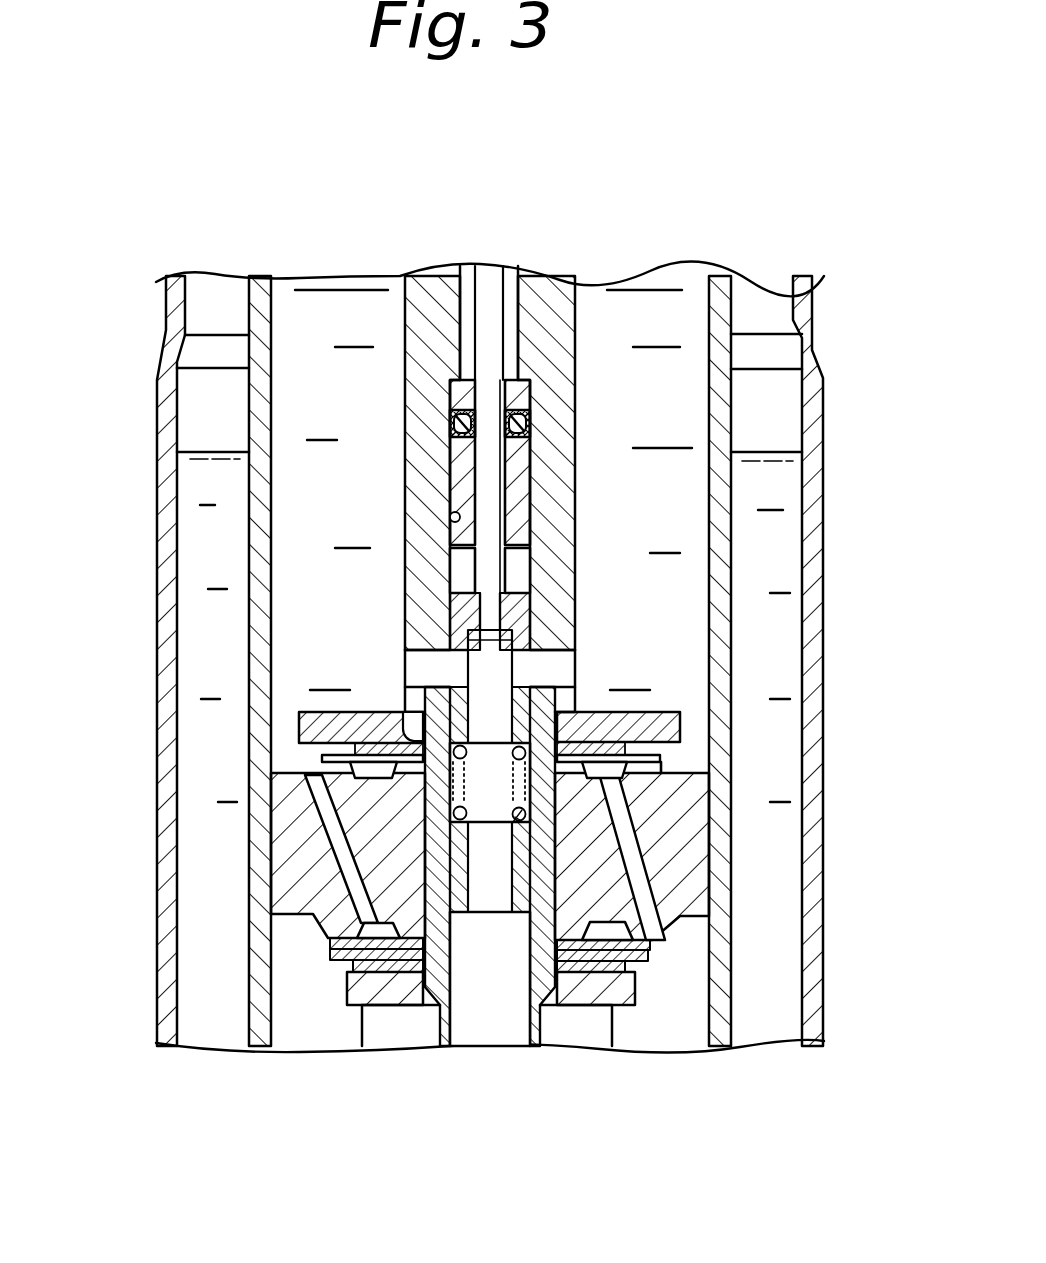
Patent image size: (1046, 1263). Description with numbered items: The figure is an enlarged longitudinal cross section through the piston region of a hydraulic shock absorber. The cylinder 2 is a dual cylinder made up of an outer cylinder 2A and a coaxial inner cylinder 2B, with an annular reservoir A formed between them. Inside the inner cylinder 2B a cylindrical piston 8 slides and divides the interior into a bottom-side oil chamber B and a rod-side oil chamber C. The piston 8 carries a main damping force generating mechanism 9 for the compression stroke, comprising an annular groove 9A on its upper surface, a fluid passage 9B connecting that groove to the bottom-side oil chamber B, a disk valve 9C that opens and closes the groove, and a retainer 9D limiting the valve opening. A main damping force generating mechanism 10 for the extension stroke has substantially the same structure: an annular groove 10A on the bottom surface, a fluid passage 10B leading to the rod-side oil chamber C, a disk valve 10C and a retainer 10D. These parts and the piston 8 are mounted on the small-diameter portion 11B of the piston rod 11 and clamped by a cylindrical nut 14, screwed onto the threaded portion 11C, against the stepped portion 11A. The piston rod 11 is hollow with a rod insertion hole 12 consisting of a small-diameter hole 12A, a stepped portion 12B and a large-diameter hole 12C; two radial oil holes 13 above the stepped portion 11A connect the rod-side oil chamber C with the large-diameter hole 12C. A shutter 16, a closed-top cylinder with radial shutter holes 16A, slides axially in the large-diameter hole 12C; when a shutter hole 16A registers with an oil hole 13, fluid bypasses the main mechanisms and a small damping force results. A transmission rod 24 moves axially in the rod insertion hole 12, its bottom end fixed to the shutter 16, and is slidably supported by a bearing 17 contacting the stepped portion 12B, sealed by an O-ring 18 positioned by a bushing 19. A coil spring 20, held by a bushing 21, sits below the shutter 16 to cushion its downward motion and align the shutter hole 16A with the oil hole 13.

The cylinder 2 is at (150, 485).
The outer cylinder 2A is at (813, 415).
The inner cylinder 2B is at (259, 392).
The rod-side oil chamber C is at (300, 430).
The annular reservoir A is at (780, 990).
The bottom-side oil chamber B is at (303, 1020).
The piston 8 is at (690, 827).
The main damping force generating mechanism 9 is at (650, 702).
The annular groove 9A is at (627, 749).
The fluid passage 9B is at (645, 873).
The disk valve 9C is at (663, 757).
The retainer 9D is at (682, 716).
The main damping force generating mechanism 10 is at (351, 1010).
The annular groove 10A is at (345, 962).
The fluid passage 10B is at (337, 850).
The disk valve 10C is at (335, 945).
The retainer 10D is at (408, 993).
The piston rod 11 is at (460, 300).
The stepped portion 11A is at (345, 728).
The small-diameter portion 11B is at (423, 880).
The threaded portion 11C is at (548, 1018).
The rod insertion hole 12 is at (508, 280).
The small-diameter hole 12A is at (463, 337).
The stepped portion 12B is at (522, 390).
The large-diameter hole 12C is at (455, 517).
The oil hole 13 is at (418, 672).
The nut 14 is at (603, 1014).
The shutter 16 is at (527, 603).
The shutter hole 16A is at (457, 665).
The bearing 17 is at (462, 380).
The O-ring 18 is at (530, 415).
The bushing 19 is at (527, 447).
The coil spring 20 is at (457, 810).
The bushing 21 is at (668, 897).
The transmission rod 24 is at (522, 493).